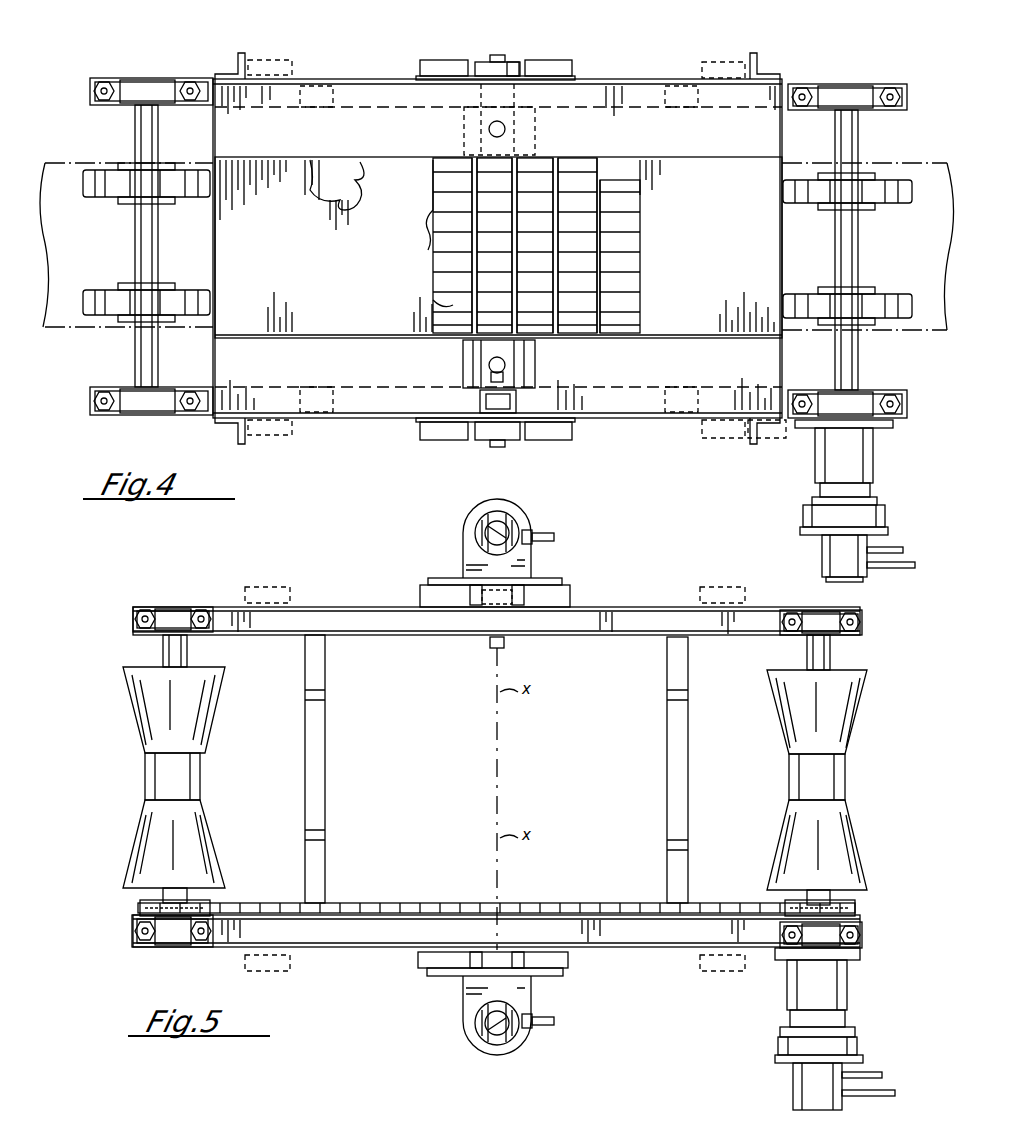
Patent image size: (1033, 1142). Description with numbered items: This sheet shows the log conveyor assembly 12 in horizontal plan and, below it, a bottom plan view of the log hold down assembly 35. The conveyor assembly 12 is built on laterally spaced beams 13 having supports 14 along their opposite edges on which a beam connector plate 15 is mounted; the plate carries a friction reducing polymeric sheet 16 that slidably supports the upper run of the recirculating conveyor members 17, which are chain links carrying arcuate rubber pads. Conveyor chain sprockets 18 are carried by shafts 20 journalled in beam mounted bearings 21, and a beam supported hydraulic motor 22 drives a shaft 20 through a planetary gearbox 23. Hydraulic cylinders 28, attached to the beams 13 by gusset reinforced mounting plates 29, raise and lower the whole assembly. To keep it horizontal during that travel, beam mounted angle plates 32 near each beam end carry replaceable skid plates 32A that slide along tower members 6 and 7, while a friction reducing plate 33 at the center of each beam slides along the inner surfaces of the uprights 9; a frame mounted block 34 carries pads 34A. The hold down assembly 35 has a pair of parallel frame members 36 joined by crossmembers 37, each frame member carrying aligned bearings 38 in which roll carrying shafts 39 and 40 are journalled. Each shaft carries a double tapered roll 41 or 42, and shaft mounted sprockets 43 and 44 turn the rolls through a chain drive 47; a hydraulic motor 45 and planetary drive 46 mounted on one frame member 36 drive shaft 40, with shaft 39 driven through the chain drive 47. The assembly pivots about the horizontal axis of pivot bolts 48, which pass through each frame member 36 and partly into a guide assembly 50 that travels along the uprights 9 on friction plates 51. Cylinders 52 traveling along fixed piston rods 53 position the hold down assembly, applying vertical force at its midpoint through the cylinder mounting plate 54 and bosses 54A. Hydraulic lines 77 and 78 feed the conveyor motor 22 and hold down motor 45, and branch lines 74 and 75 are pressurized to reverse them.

In FIG. 4, the vertical members 6 is at (296, 48).
In FIG. 5, the vertical members 6 is at (268, 582).
In FIG. 4, the vertical members 7 is at (544, 34).
In FIG. 5, the vertical members 7 is at (728, 590).
In FIG. 4, the uprights 9 is at (427, 60).
In FIG. 5, the uprights 9 is at (574, 596).
In FIG. 4, the log conveyor assembly 12 is at (640, 70).
In FIG. 4, the beams 13 is at (355, 80).
In FIG. 4, the supports 14 is at (304, 108).
In FIG. 4, the beam connector plate 15 is at (352, 160).
In FIG. 4, the polymeric sheet 16 is at (412, 255).
In FIG. 4, the conveyor members 17 is at (40, 234).
In FIG. 4, the conveyor chain sprockets 18 is at (190, 198).
In FIG. 4, the shafts 20 is at (156, 142).
In FIG. 4, the bearings 21 is at (148, 87).
In FIG. 4, the hydraulic motor 22 is at (826, 555).
In FIG. 4, the planetary gearbox 23 is at (878, 512).
In FIG. 4, the hydraulic cylinders 28 is at (534, 360).
In FIG. 4, the mounting plates 29 is at (540, 132).
In FIG. 4, the angle plates 32 is at (224, 57).
In FIG. 4, the skid plates 32A is at (248, 63).
In FIG. 4, the friction reducing plate 33 is at (462, 62).
In FIG. 4, the block 34 is at (510, 60).
In FIG. 4, the pads 34A is at (526, 58).
In FIG. 5, the log hold down assembly 35 is at (626, 570).
In FIG. 5, the frame members 36 is at (404, 636).
In FIG. 5, the crossmembers 37 is at (324, 768).
In FIG. 5, the bearings 38 is at (176, 612).
In FIG. 5, the roll carrying shaft 39 is at (180, 660).
In FIG. 5, the roll carrying shaft 40 is at (824, 664).
In FIG. 5, the double tapered roll 41 is at (190, 768).
In FIG. 5, the double tapered roll 42 is at (838, 764).
In FIG. 5, the sprocket 43 is at (140, 902).
In FIG. 5, the sprocket 44 is at (844, 906).
In FIG. 5, the hydraulic motor 45 is at (808, 1104).
In FIG. 5, the planetary drive 46 is at (844, 1046).
In FIG. 5, the chain drive 47 is at (444, 910).
In FIG. 5, the pivot bolts 48 is at (494, 652).
In FIG. 5, the guide assembly 50 is at (520, 586).
In FIG. 5, the friction plates 51 is at (524, 602).
In FIG. 5, the cylinders 52 is at (514, 518).
In FIG. 5, the fixed piston rod 53 is at (484, 532).
In FIG. 5, the cylinder mounting plate 54 is at (434, 572).
In FIG. 5, the bosses 54A is at (462, 550).
In FIG. 5, the branch line 74 is at (878, 1098).
In FIG. 4, the branch line 75 is at (892, 570).
In FIG. 4, the line 77 is at (894, 546).
In FIG. 5, the line 78 is at (872, 1072).